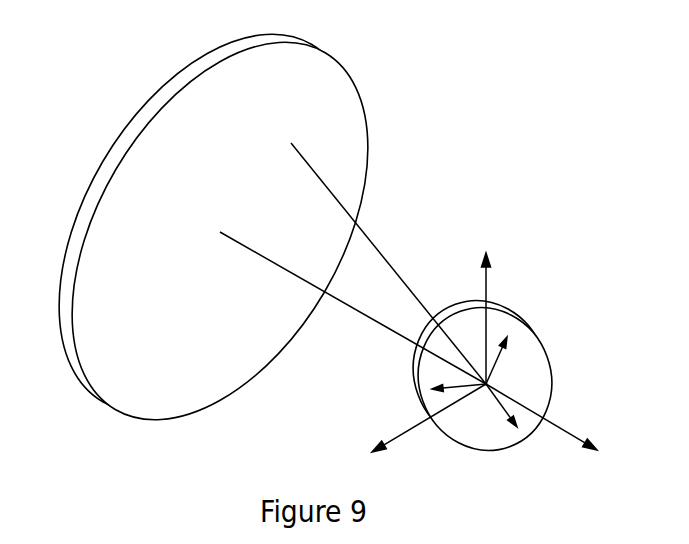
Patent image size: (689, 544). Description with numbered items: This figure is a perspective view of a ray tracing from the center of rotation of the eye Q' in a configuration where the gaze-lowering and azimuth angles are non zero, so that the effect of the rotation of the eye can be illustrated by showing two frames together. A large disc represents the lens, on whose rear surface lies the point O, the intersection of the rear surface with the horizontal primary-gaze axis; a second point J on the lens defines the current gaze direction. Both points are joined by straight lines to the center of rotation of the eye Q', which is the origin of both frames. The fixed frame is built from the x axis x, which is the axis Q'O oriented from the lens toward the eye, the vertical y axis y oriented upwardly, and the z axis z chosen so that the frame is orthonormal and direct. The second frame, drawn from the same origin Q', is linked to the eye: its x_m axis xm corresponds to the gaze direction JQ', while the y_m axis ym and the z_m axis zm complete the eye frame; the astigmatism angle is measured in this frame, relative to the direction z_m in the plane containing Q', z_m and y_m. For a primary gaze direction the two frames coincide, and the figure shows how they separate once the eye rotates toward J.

The point J is at (299, 135).
The point O is at (212, 224).
The center of rotation of the eye Q' is at (504, 375).
The x axis x is at (541, 429).
The y axis y is at (496, 308).
The z axis z is at (429, 429).
The x_m axis xm is at (494, 413).
The y_m axis ym is at (512, 360).
The z_m axis zm is at (454, 372).